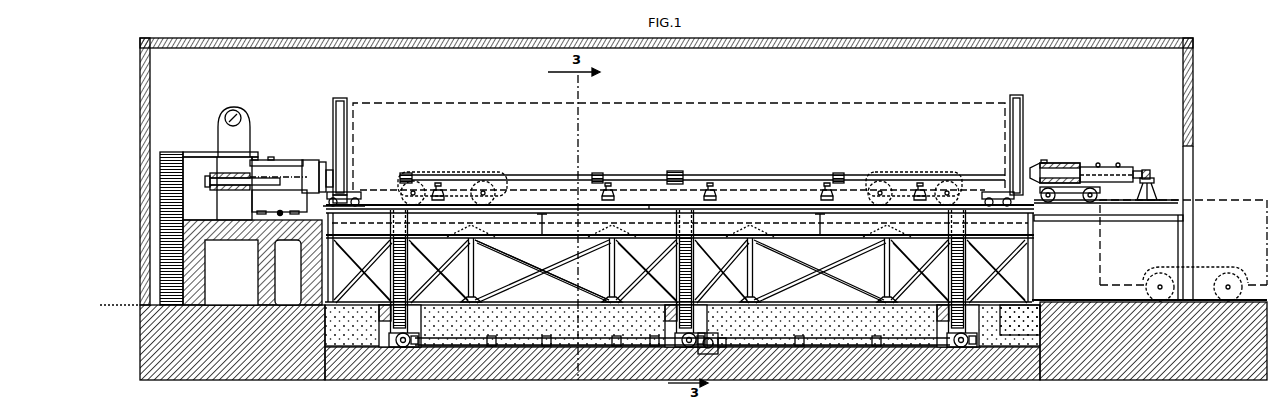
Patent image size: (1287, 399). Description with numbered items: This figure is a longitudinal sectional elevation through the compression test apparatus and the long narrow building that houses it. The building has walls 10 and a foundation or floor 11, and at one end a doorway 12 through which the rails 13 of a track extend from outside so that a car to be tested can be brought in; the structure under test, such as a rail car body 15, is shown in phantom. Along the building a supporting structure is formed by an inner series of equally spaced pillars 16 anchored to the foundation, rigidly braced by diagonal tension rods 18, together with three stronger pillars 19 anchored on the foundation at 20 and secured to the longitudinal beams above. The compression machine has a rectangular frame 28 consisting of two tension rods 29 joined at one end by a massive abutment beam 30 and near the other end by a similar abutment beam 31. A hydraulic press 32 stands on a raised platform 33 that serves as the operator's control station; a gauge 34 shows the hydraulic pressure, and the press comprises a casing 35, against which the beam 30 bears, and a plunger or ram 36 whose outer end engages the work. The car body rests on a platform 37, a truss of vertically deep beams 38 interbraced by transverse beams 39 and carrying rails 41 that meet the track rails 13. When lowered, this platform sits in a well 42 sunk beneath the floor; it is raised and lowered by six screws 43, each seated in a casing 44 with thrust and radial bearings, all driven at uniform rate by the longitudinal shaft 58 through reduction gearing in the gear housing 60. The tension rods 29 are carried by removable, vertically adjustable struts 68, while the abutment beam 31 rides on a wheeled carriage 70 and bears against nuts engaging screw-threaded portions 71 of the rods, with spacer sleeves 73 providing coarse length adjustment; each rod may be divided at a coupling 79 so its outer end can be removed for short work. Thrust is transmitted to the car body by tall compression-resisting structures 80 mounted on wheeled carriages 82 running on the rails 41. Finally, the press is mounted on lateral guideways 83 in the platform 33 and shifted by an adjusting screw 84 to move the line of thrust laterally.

The walls 10 is at (140, 140).
The foundation or floor 11 is at (1082, 292).
The doorway 12 is at (1193, 178).
The rails 13 is at (1205, 300).
The rail car body 15 is at (632, 102).
The pillars 16 is at (474, 266).
The diagonal tension rods 18 is at (822, 279).
The pillars 19 is at (410, 265).
The anchorage 20 is at (988, 312).
The rectangular frame 28 is at (1076, 163).
The tension rods 29 is at (216, 167).
The abutment beam 30 is at (212, 189).
The abutment beam 31 is at (1045, 163).
The hydraulic press 32 is at (283, 160).
The platform 33 is at (267, 222).
The gauge 34 is at (241, 116).
The casing 35 is at (296, 190).
The plunger or ram 36 is at (321, 162).
The platform 37 is at (372, 238).
The vertically deep beams 38 is at (552, 233).
The transverse beams 39 is at (537, 228).
The rails 41 is at (657, 207).
The well 42 is at (557, 306).
The screws 43 is at (406, 298).
The casing 44 is at (397, 351).
The longitudinal shaft 58 is at (606, 349).
The gear housing 60 is at (709, 356).
The struts 68 is at (441, 187).
The wheeled carriage 70 is at (1068, 199).
The screw-threaded portions 71 is at (407, 173).
The spacer sleeves 73 is at (1112, 166).
The coupling 79 is at (681, 172).
The vertical compression-resisting structure 80 is at (347, 105).
The wheeled carriages 82 is at (362, 199).
The lateral guideways 83 is at (290, 225).
The adjusting screw 84 is at (282, 212).